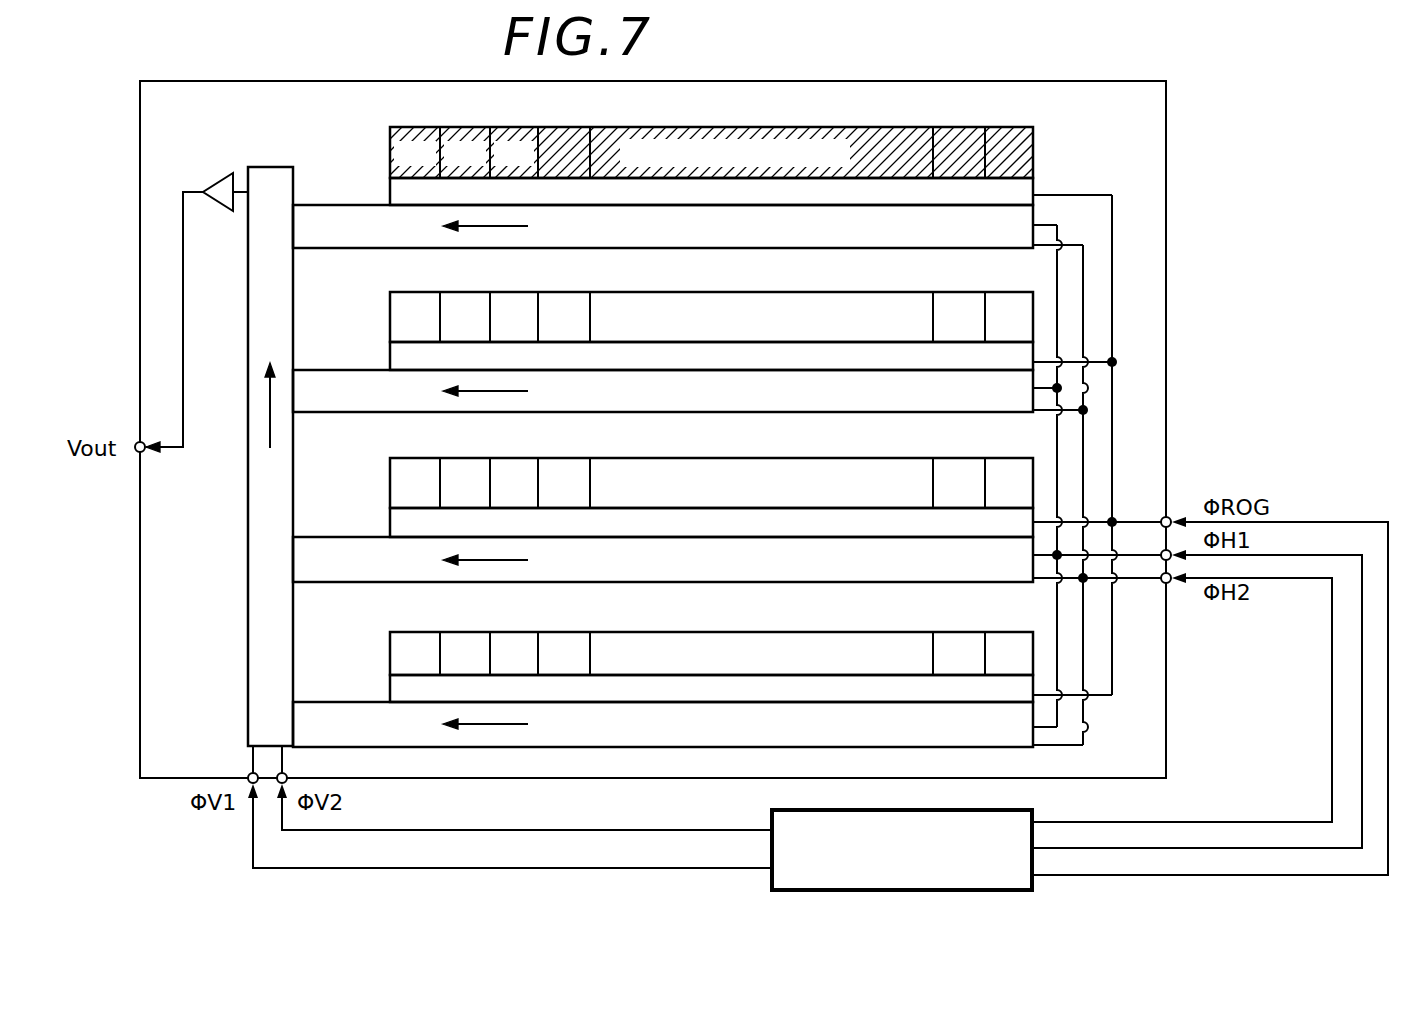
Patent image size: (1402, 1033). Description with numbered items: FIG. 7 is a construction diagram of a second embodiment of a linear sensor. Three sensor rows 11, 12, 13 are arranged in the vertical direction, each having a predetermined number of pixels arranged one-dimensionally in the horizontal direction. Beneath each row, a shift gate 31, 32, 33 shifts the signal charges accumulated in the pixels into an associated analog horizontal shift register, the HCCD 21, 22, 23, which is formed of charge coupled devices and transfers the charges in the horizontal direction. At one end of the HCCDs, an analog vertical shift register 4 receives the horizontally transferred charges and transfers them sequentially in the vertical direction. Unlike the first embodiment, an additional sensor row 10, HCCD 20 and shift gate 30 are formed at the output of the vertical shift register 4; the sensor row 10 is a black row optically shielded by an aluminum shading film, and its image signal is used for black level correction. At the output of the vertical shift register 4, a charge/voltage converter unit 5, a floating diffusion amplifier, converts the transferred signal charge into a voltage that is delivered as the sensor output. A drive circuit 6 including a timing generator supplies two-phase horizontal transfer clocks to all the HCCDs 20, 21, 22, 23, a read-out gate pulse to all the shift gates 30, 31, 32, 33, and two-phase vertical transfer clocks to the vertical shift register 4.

The sensor row 10 is at (472, 127).
The sensor row 11 is at (472, 292).
The sensor row 12 is at (472, 458).
The sensor row 13 is at (472, 632).
The HCCD 20 is at (550, 223).
The HCCD 21 is at (550, 388).
The HCCD 22 is at (550, 554).
The HCCD 23 is at (550, 728).
The shift gate 30 is at (858, 195).
The shift gate 31 is at (858, 360).
The shift gate 32 is at (858, 526).
The shift gate 33 is at (858, 700).
The VCCD 4 is at (248, 678).
The charge/voltage converter unit 5 is at (225, 178).
The drive circuit 6 is at (772, 815).